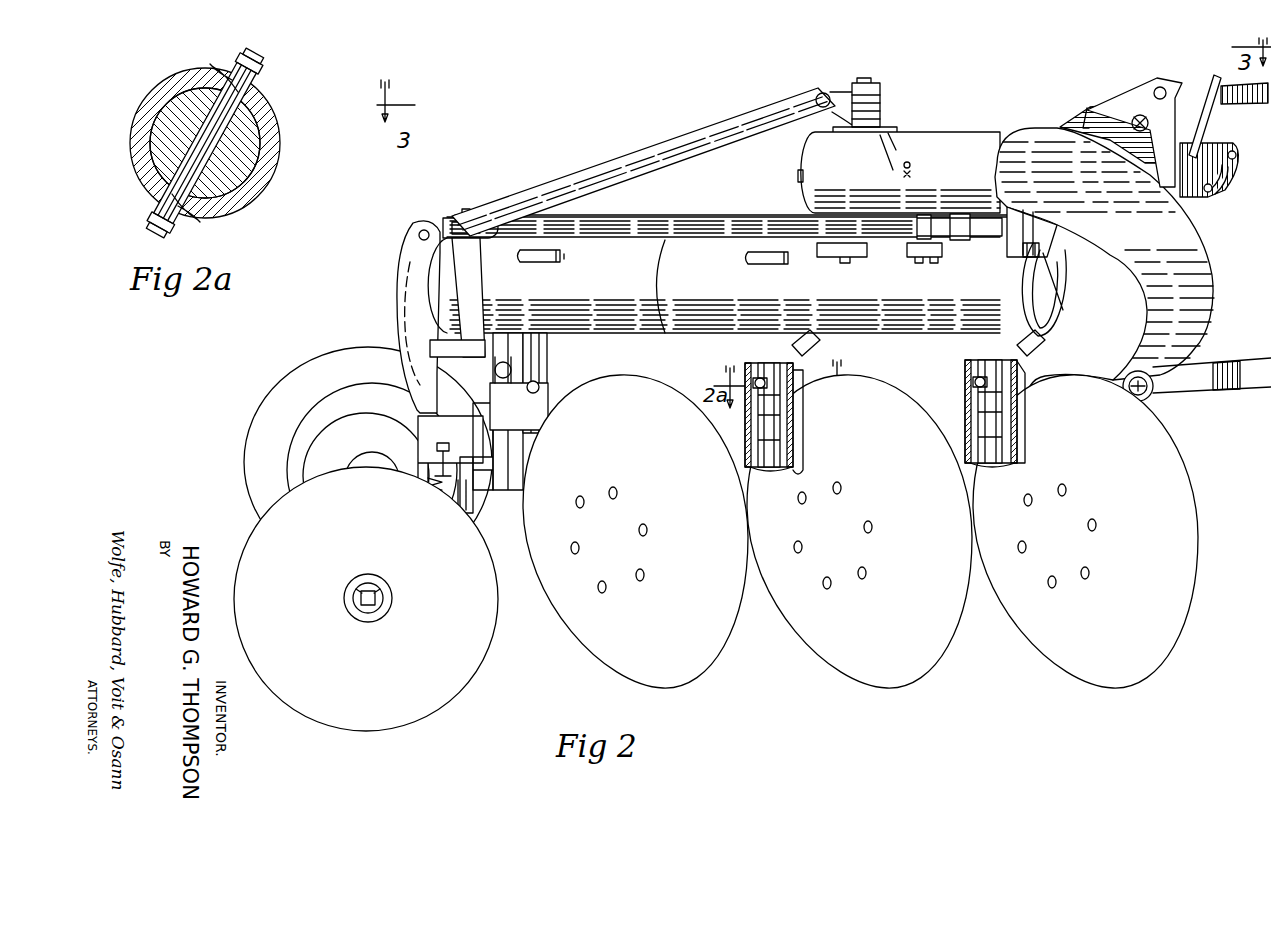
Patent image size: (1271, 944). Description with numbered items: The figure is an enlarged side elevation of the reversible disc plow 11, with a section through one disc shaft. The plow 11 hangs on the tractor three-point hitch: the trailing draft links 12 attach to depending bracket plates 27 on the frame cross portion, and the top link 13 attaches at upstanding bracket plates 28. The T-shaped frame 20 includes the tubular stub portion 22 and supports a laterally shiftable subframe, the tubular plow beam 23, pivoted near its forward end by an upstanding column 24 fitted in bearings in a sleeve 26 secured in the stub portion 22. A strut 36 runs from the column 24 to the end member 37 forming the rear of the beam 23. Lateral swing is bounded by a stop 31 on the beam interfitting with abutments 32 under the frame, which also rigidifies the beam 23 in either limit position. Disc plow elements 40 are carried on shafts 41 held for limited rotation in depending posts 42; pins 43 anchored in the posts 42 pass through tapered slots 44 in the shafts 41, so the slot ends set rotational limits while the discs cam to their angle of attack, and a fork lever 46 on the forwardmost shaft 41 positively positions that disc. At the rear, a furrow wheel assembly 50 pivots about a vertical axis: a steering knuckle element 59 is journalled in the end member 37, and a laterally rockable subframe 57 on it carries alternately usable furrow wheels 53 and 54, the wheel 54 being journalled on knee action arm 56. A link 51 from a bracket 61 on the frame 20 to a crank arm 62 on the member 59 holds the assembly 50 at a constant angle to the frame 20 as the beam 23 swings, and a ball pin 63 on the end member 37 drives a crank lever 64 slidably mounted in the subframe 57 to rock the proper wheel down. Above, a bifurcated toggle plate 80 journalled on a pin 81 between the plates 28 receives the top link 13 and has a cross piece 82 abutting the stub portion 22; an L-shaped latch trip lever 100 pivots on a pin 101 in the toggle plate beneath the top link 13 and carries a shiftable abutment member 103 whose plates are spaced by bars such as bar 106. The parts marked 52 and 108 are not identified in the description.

In FIG. 2, the reversible disc plow 11 is at (683, 140).
In FIG. 2, the trailing draft links 12 is at (1205, 394).
In FIG. 2, the top link 13 is at (1244, 102).
In FIG. 2, the T-shaped frame 20 is at (995, 132).
In FIG. 2, the stub portion 22 is at (950, 135).
In FIG. 2, the tubular plow beam 23 is at (697, 335).
In FIG. 2, the upstanding column 24 is at (858, 88).
In FIG. 2, the sleeve 26 is at (893, 133).
In FIG. 2, the depending bracket plates 27 is at (1200, 330).
In FIG. 2, the upstanding bracket plates 28 is at (1105, 110).
In FIG. 2, the stop 31 is at (1050, 305).
In FIG. 2, the abutments 32 is at (1060, 234).
In FIG. 2, the strut 36 is at (590, 178).
In FIG. 2, the end member 37 is at (410, 240).
In FIG. 2, the disc plow elements 40 is at (572, 636).
In FIG. 2A, the shafts 41 is at (255, 140).
In FIG. 2, the shafts 41 is at (792, 429).
In FIG. 2A, the depending posts 42 is at (273, 160).
In FIG. 2, the depending posts 42 is at (555, 335).
In FIG. 2A, the pins 43 is at (170, 190).
In FIG. 2, the pins 43 is at (540, 390).
In FIG. 2A, the tapered slots 44 is at (203, 97).
In FIG. 2, the tapered slots 44 is at (860, 317).
In FIG. 2, the fork lever 46 is at (1020, 257).
In FIG. 2, the furrow wheel assembly 50 is at (237, 481).
In FIG. 2, the link 51 is at (677, 218).
In FIG. 2, the pin 52 is at (1028, 232).
In FIG. 2, the furrow wheel 53 is at (263, 395).
In FIG. 2, the furrow wheel 54 is at (372, 731).
In FIG. 2, the knee action arm 56 is at (478, 512).
In FIG. 2, the laterally rockable subframe 57 is at (418, 433).
In FIG. 2, the steering knuckle element 59 is at (438, 412).
In FIG. 2, the bracket 61 is at (965, 214).
In FIG. 2, the crank arm 62 is at (475, 290).
In FIG. 2, the ball pin 63 is at (503, 362).
In FIG. 2, the crank lever 64 is at (545, 400).
In FIG. 2, the toggle plate 80 is at (1152, 78).
In FIG. 2, the pin 81 is at (1140, 115).
In FIG. 2, the cross piece 82 is at (1085, 110).
In FIG. 2, the latch trip lever 100 is at (1190, 143).
In FIG. 2, the pin 101 is at (1238, 160).
In FIG. 2, the shiftable abutment member 103 is at (1228, 192).
In FIG. 2, the bar 106 is at (1212, 196).
In FIG. 2, the lever 108 is at (1210, 88).